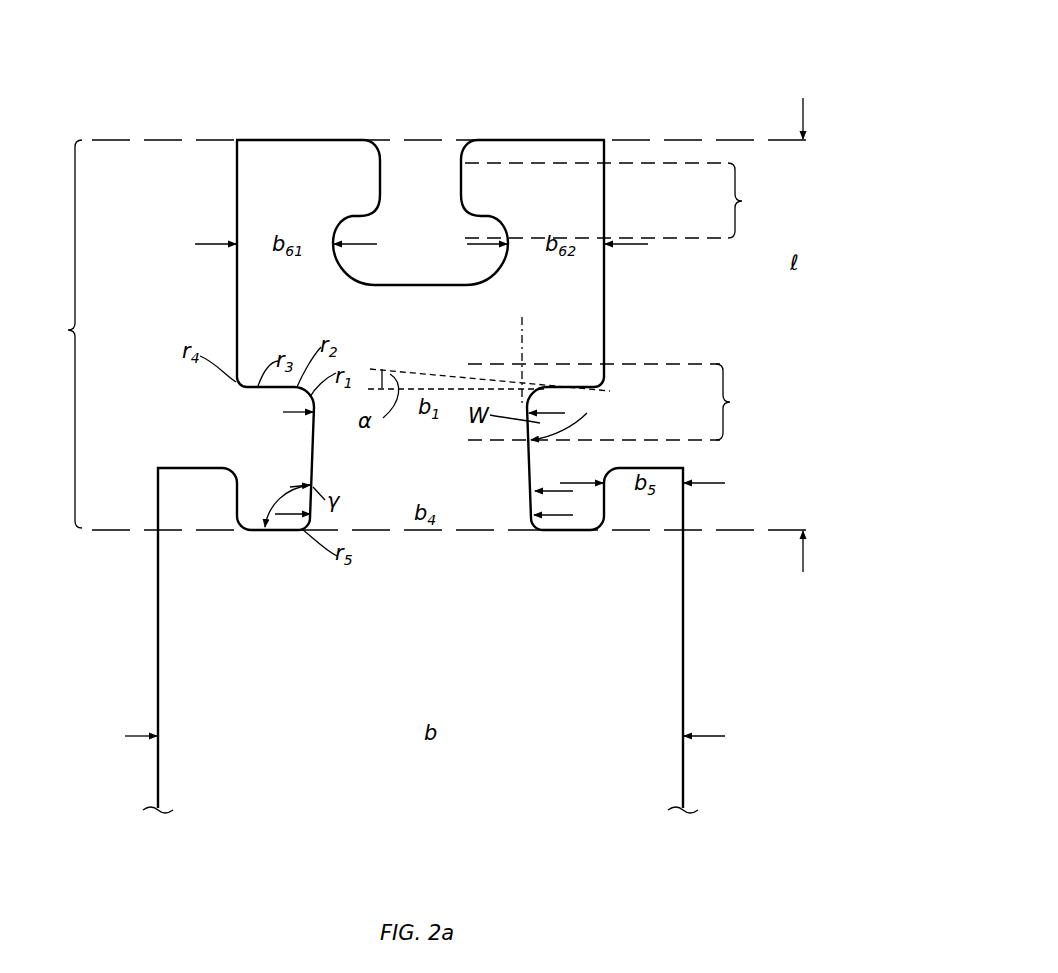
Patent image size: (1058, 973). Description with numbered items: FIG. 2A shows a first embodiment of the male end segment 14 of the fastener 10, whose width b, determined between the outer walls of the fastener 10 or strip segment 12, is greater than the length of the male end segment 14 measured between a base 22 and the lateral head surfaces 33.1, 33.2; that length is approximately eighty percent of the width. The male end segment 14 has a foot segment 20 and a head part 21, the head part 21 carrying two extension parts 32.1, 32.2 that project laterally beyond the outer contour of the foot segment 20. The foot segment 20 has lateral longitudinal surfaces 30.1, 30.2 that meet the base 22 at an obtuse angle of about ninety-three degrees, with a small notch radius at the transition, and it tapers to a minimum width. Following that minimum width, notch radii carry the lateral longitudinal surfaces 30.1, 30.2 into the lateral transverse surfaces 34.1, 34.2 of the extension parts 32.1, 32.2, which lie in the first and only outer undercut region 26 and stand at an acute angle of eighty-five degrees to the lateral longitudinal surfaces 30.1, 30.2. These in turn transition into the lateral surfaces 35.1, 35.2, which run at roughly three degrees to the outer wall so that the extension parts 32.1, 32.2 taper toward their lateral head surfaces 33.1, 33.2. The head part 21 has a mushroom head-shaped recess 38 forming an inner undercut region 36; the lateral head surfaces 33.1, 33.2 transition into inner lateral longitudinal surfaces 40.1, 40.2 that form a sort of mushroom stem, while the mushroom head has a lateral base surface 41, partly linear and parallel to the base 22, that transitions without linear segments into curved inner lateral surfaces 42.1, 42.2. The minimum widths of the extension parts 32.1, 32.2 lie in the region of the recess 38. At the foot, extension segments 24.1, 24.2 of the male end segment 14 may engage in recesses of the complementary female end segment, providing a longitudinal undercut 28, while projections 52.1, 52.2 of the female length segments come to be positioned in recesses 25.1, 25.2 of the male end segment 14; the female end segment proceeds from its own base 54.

The fastener 10 is at (745, 15).
The strip segment 12 is at (197, 758).
The male end segment 14 is at (430, 334).
The foot segment 20 is at (221, 443).
The head part 21 is at (235, 257).
The base 22 is at (575, 536).
The extension segment 24.1 is at (197, 510).
The extension segment 24.2 is at (650, 520).
The recess 25.1 is at (278, 508).
The recess 25.2 is at (550, 522).
The outer undercut region 26 is at (613, 402).
The longitudinal undercut 28 is at (607, 520).
The lateral longitudinal surface 30.1 is at (311, 465).
The lateral longitudinal surface 30.2 is at (534, 474).
The extension part 32.1 is at (288, 331).
The extension part 32.2 is at (558, 331).
The lateral head surface 33.1 is at (307, 137).
The lateral head surface 33.2 is at (537, 137).
The lateral transverse surface 34.1 is at (277, 395).
The lateral transverse surface 34.2 is at (563, 393).
The lateral surface 35.1 is at (235, 235).
The lateral surface 35.2 is at (607, 295).
The inner undercut region 36 is at (618, 200).
The mushroom head-shaped recess 38 is at (427, 252).
The inner lateral longitudinal surface 40.1 is at (383, 160).
The inner lateral longitudinal surface 40.2 is at (458, 160).
The lateral base surface 41 is at (425, 283).
The curved inner lateral surface 42.1 is at (342, 256).
The curved inner lateral surface 42.2 is at (502, 255).
The projection 52.1 is at (256, 497).
The projection 52.2 is at (587, 495).
The base 54 is at (517, 146).